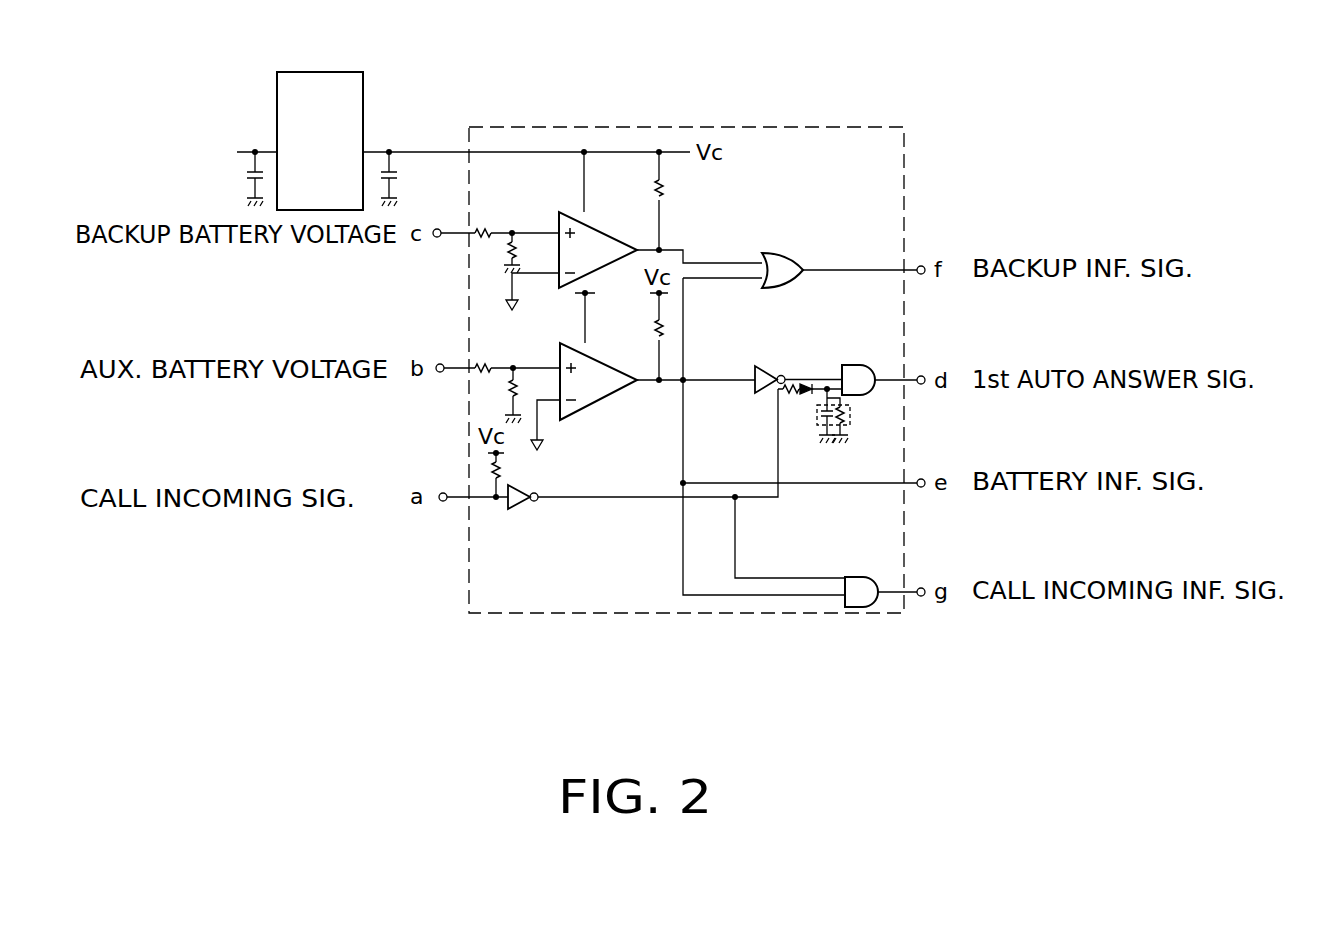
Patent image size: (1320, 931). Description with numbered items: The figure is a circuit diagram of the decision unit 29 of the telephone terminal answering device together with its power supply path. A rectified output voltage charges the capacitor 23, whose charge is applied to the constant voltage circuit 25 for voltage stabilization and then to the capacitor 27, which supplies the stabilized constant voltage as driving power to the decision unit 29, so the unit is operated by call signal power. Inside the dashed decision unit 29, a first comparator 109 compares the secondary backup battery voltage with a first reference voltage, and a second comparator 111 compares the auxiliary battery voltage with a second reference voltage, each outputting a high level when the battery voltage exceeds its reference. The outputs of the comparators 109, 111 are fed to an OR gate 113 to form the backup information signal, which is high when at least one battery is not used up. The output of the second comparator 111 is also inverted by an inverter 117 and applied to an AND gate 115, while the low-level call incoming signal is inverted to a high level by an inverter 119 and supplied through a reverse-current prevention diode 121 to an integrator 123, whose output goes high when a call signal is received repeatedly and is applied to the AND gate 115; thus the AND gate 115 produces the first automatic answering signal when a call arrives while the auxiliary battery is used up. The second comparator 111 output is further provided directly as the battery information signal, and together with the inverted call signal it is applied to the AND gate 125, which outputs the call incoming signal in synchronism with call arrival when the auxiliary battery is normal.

The capacitor 23 is at (234, 178).
The constant voltage circuit 25 is at (353, 72).
The capacitor 27 is at (398, 182).
The decision unit 29 is at (904, 150).
The first comparator 109 is at (614, 203).
The second comparator 111 is at (600, 360).
The OR gate 113 is at (782, 254).
The AND gate 115 is at (850, 365).
The inverter 117 is at (756, 392).
The inverter 119 is at (522, 500).
The reverse-current prevention diode 121 is at (806, 400).
The integrator 123 is at (850, 415).
The AND gate 125 is at (852, 577).